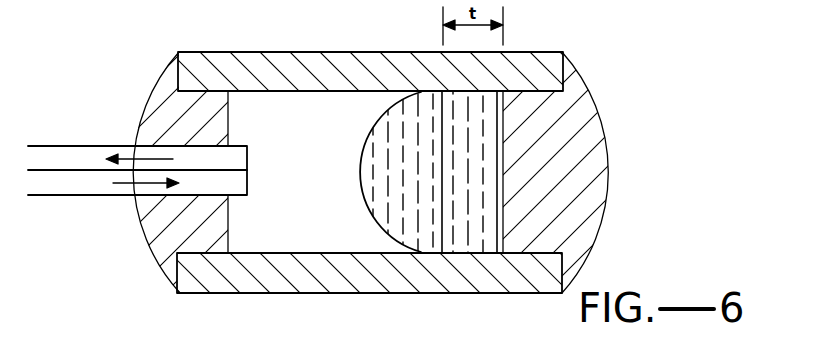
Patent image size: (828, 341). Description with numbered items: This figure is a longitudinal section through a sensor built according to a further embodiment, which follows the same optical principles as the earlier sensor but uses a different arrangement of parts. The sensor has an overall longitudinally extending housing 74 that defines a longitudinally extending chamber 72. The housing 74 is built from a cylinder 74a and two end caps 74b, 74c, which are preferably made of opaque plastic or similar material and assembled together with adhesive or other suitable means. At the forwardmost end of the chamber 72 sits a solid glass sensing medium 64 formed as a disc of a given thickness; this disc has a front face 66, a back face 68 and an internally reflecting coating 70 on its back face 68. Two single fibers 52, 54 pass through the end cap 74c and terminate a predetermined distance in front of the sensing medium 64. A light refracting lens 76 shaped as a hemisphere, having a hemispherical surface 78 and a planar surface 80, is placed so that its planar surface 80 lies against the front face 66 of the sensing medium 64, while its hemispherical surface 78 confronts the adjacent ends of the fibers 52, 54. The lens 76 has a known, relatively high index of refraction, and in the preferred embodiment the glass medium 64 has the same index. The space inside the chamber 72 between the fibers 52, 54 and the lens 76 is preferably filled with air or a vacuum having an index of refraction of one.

The single fiber 52 is at (87, 188).
The single fiber 54 is at (86, 148).
The solid glass sensing medium 64 is at (463, 247).
The front face 66 is at (440, 238).
The back face 68 is at (497, 254).
The internally reflecting coating 70 is at (498, 152).
The longitudinally extending chamber 72 is at (313, 250).
The longitudinally extending housing 74 is at (414, 180).
The cylinder 74a is at (288, 287).
The end cap 74b is at (585, 192).
The end cap 74c is at (153, 105).
The light refracting lens 76 is at (395, 201).
The hemispherical surface 78 is at (365, 197).
The planar surface 80 is at (452, 147).